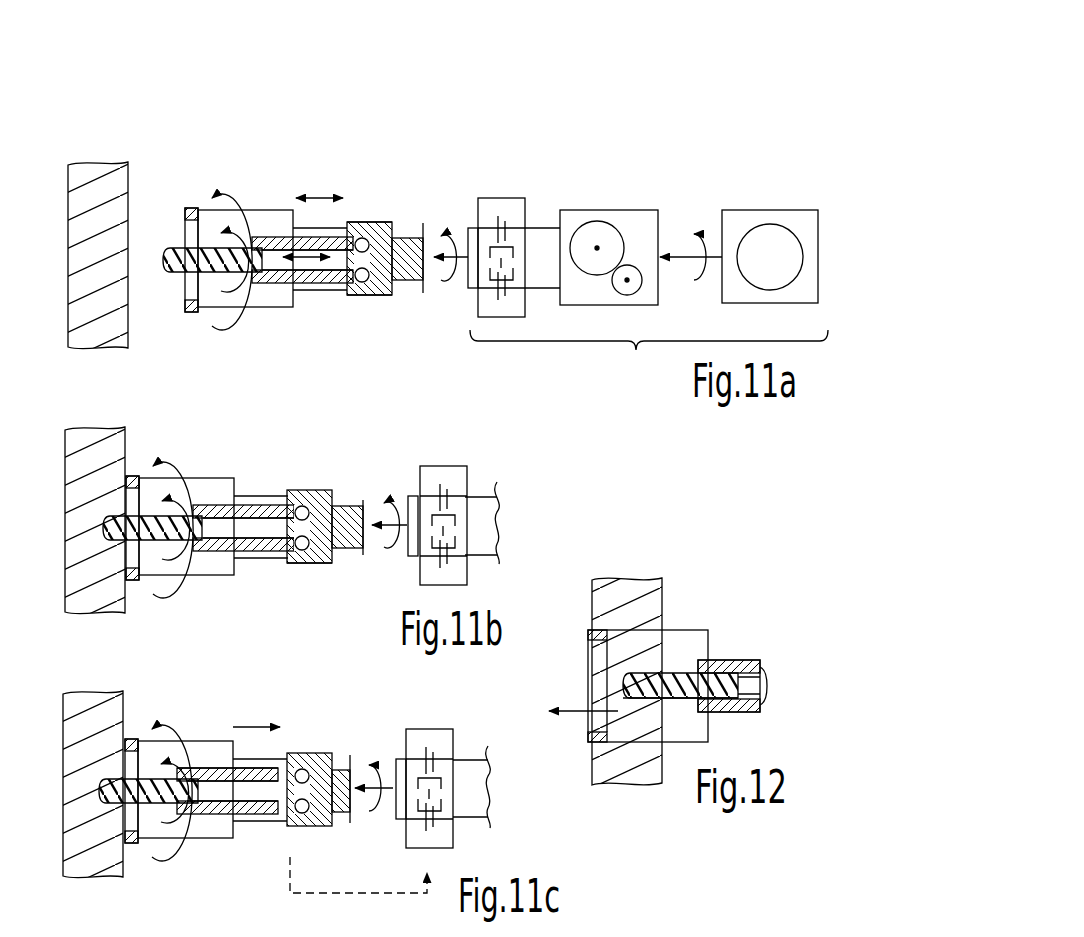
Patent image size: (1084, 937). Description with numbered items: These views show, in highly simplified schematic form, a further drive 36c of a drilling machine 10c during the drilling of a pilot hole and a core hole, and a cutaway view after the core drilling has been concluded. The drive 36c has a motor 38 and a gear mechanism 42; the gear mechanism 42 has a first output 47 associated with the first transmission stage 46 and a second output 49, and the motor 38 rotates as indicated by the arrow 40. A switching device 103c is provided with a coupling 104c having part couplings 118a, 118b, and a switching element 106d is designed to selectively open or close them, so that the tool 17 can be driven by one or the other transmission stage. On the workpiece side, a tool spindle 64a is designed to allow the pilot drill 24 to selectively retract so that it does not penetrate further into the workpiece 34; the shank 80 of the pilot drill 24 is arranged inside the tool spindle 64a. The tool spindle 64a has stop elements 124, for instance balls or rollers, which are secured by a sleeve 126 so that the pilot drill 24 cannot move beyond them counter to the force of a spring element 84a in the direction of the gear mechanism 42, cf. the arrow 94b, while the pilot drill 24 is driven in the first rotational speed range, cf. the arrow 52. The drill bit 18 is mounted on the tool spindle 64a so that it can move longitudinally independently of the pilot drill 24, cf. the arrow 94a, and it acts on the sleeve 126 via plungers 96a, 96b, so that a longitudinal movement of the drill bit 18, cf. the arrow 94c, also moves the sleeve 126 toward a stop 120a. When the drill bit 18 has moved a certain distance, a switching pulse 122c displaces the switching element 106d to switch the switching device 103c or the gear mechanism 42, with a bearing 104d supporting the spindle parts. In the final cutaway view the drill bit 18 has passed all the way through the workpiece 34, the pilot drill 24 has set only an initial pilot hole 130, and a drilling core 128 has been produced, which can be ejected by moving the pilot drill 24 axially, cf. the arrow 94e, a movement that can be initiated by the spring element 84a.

In FIG. 11A, the drilling machine 10c is at (670, 136).
In FIG. 11A, the tool 17 is at (193, 142).
In FIG. 12, the tool 17 is at (683, 568).
In FIG. 11A, the drill bit 18 is at (264, 206).
In FIG. 11B, the drill bit 18 is at (203, 476).
In FIG. 11C, the drill bit 18 is at (158, 745).
In FIG. 12, the drill bit 18 is at (688, 627).
In FIG. 11A, the pilot drill 24 is at (180, 274).
In FIG. 11B, the pilot drill 24 is at (150, 539).
In FIG. 11C, the pilot drill 24 is at (140, 802).
In FIG. 12, the pilot drill 24 is at (681, 668).
In FIG. 11A, the workpiece 34 is at (98, 175).
In FIG. 11B, the workpiece 34 is at (95, 520).
In FIG. 11C, the workpiece 34 is at (93, 784).
In FIG. 12, the workpiece 34 is at (630, 587).
In FIG. 11A, the drive 36c is at (648, 207).
In FIG. 11A, the motor 38 is at (770, 210).
In FIG. 11A, the direction of rotation 40 is at (697, 232).
In FIG. 11A, the gear mechanism 42 is at (602, 207).
In FIG. 11A, the first transmission stage 46 is at (444, 270).
In FIG. 11C, the first transmission stage 46 is at (363, 795).
In FIG. 11A, the first output 47 is at (538, 290).
In FIG. 11A, the second output 49 is at (538, 228).
In FIG. 11A, the arrow 52 is at (243, 198).
In FIG. 11B, the arrow 52 is at (187, 468).
In FIG. 11C, the arrow 52 is at (384, 768).
In FIG. 11A, the tool spindle 64a is at (268, 290).
In FIG. 11B, the tool spindle 64a is at (259, 496).
In FIG. 11C, the tool spindle 64a is at (227, 791).
In FIG. 12, the tool spindle 64a is at (741, 652).
In FIG. 11A, the shank 80 is at (334, 284).
In FIG. 11C, the shank 80 is at (272, 815).
In FIG. 11A, the spring element 84a is at (368, 297).
In FIG. 11A, the arrow 94a is at (317, 197).
In FIG. 11A, the arrow 94b is at (309, 262).
In FIG. 11C, the movement arrow 94c is at (258, 722).
In FIG. 12, the movement arrow 94e is at (572, 713).
In FIG. 11B, the plunger 96a is at (250, 496).
In FIG. 11B, the plunger 96b is at (253, 558).
In FIG. 11A, the switching device 103c is at (505, 147).
In FIG. 11B, the switching device 103c is at (455, 451).
In FIG. 11A, the coupling 104c is at (506, 196).
In FIG. 11B, the coupling 104c is at (433, 462).
In FIG. 11C, the coupling 104c is at (430, 726).
In FIG. 11B, the bearing 104d is at (316, 566).
In FIG. 11B, the switching element 106d is at (454, 526).
In FIG. 11C, the switching element 106d is at (433, 796).
In FIG. 11B, the part coupling 118a is at (438, 487).
In FIG. 11B, the part coupling 118b is at (437, 558).
In FIG. 11A, the stop 120a is at (426, 236).
In FIG. 11C, the stop 120a is at (350, 822).
In FIG. 11C, the switching pulse 122c is at (355, 896).
In FIG. 11A, the stop elements 124 is at (365, 220).
In FIG. 11C, the stop elements 124 is at (284, 764).
In FIG. 11A, the sleeve 126 is at (374, 224).
In FIG. 11B, the sleeve 126 is at (326, 490).
In FIG. 11C, the sleeve 126 is at (323, 755).
In FIG. 12, the drilling core 128 is at (604, 700).
In FIG. 12, the pilot hole 130 is at (637, 705).